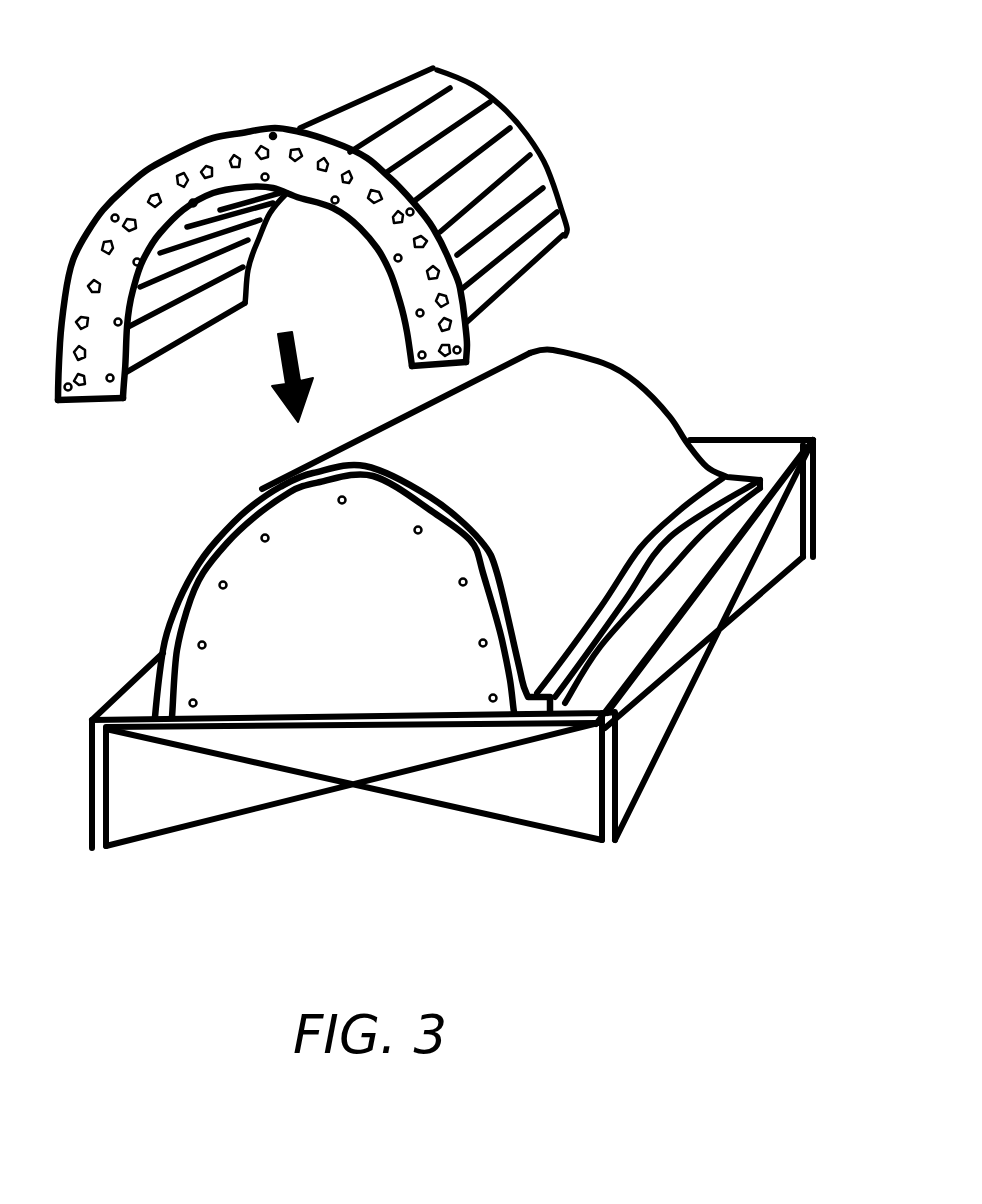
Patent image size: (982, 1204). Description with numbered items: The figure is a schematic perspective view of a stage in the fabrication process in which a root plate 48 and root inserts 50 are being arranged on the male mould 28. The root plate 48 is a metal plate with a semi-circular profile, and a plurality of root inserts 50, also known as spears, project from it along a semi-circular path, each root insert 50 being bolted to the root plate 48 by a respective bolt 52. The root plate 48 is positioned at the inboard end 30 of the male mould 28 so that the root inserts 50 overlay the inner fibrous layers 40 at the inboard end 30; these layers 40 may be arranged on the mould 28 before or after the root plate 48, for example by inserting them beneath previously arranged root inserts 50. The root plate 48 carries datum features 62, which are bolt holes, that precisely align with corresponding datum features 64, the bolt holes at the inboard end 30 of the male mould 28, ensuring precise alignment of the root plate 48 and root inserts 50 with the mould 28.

The male mould 28 is at (338, 687).
The inboard end 30 is at (157, 584).
The inner fibrous layers 40 is at (627, 418).
The root plate 48 is at (137, 200).
The root inserts 50 is at (468, 98).
The bolt 52 is at (233, 157).
The datum features 62 is at (118, 378).
The datum features 64 is at (270, 543).